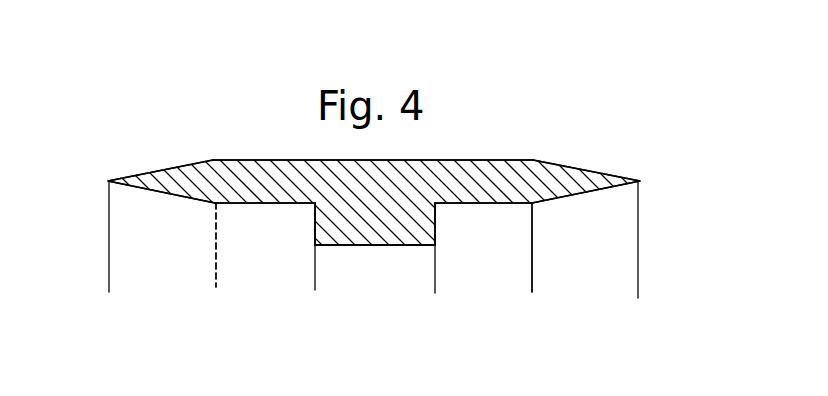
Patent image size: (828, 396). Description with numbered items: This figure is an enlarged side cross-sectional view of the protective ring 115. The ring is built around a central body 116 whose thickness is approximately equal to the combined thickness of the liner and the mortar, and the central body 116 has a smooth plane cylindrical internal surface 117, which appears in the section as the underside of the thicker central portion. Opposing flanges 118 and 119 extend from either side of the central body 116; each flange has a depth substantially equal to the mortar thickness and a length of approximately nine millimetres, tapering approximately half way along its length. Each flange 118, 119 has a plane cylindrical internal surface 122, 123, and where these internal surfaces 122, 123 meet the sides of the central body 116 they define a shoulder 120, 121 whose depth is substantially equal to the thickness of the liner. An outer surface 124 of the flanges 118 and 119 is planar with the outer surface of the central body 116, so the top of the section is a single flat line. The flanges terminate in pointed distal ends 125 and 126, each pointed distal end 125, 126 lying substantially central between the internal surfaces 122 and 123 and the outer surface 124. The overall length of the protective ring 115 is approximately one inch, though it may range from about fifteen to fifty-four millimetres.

The protective ring 115 is at (465, 148).
The central body 116 is at (348, 217).
The internal surface 117 is at (418, 293).
The flange 118 is at (508, 214).
The flange 119 is at (242, 214).
The shoulder 120 is at (438, 227).
The shoulder 121 is at (315, 233).
The internal surface 122 is at (511, 263).
The internal surface 123 is at (277, 268).
The outer surface 124 is at (252, 159).
The pointed distal end 125 is at (640, 180).
The pointed distal end 126 is at (108, 180).